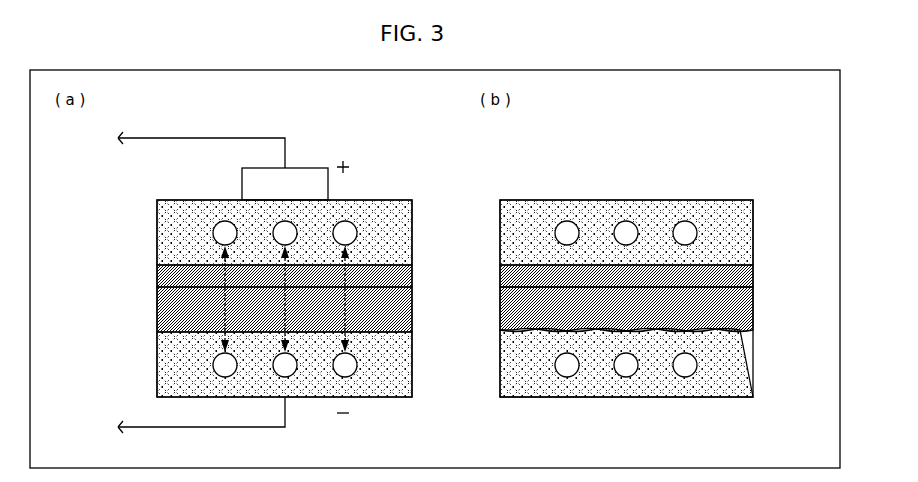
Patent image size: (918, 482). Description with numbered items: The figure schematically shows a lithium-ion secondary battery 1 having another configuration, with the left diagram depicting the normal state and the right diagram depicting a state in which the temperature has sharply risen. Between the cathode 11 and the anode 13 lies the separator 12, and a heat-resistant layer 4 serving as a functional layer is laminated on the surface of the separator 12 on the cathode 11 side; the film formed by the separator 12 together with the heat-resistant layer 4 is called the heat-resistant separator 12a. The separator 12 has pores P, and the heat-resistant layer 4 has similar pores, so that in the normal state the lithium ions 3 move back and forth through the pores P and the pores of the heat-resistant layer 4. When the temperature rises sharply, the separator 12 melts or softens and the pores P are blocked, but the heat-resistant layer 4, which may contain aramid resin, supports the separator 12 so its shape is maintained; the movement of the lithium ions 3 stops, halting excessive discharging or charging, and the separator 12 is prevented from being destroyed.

The lithium-ion secondary battery 1 is at (73, 200).
The lithium ions 3 is at (228, 224).
The heat-resistant layer 4 is at (157, 278).
The cathode 11 is at (157, 234).
The separator 12 is at (157, 318).
The heat-resistant separator 12a is at (118, 265).
The anode 13 is at (157, 366).
The pores P is at (240, 293).